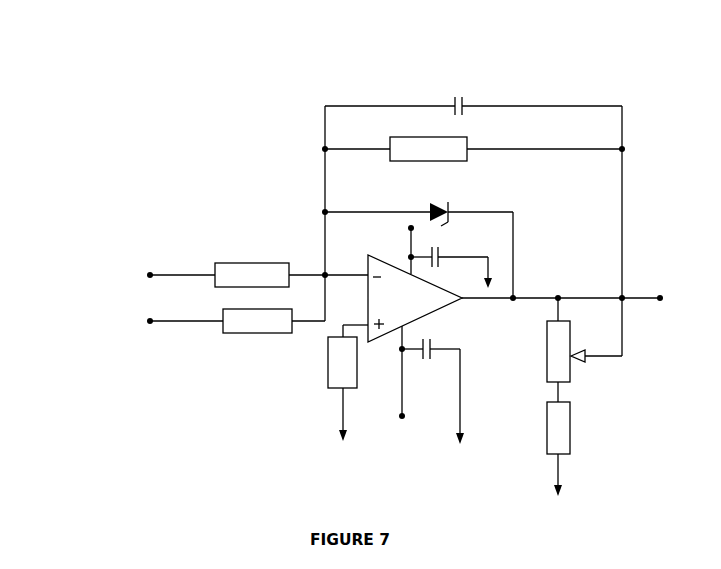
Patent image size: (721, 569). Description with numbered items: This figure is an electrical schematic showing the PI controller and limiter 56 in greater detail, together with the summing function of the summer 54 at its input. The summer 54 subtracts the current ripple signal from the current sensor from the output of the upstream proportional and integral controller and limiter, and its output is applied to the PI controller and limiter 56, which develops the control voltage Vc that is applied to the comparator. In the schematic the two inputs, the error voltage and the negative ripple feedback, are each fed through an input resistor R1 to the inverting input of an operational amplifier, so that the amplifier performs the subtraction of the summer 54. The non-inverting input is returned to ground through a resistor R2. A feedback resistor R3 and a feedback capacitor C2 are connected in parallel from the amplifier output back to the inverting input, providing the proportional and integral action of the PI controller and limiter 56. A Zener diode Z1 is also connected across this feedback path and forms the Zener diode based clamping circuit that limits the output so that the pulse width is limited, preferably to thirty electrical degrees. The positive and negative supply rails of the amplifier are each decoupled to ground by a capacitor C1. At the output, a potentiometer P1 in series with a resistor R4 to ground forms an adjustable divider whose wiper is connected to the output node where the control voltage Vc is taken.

The summer 54 is at (255, 368).
The PI controller and limiter 56 is at (507, 87).
The input resistor R1 is at (253, 298).
The non-inverting input resistor R2 is at (342, 362).
The feedback resistor R3 is at (472, 149).
The output divider resistor R4 is at (558, 428).
The potentiometer P1 is at (567, 351).
The supply decoupling capacitor C1 is at (447, 339).
The feedback capacitor C2 is at (473, 92).
The zener diode Z1 is at (448, 202).